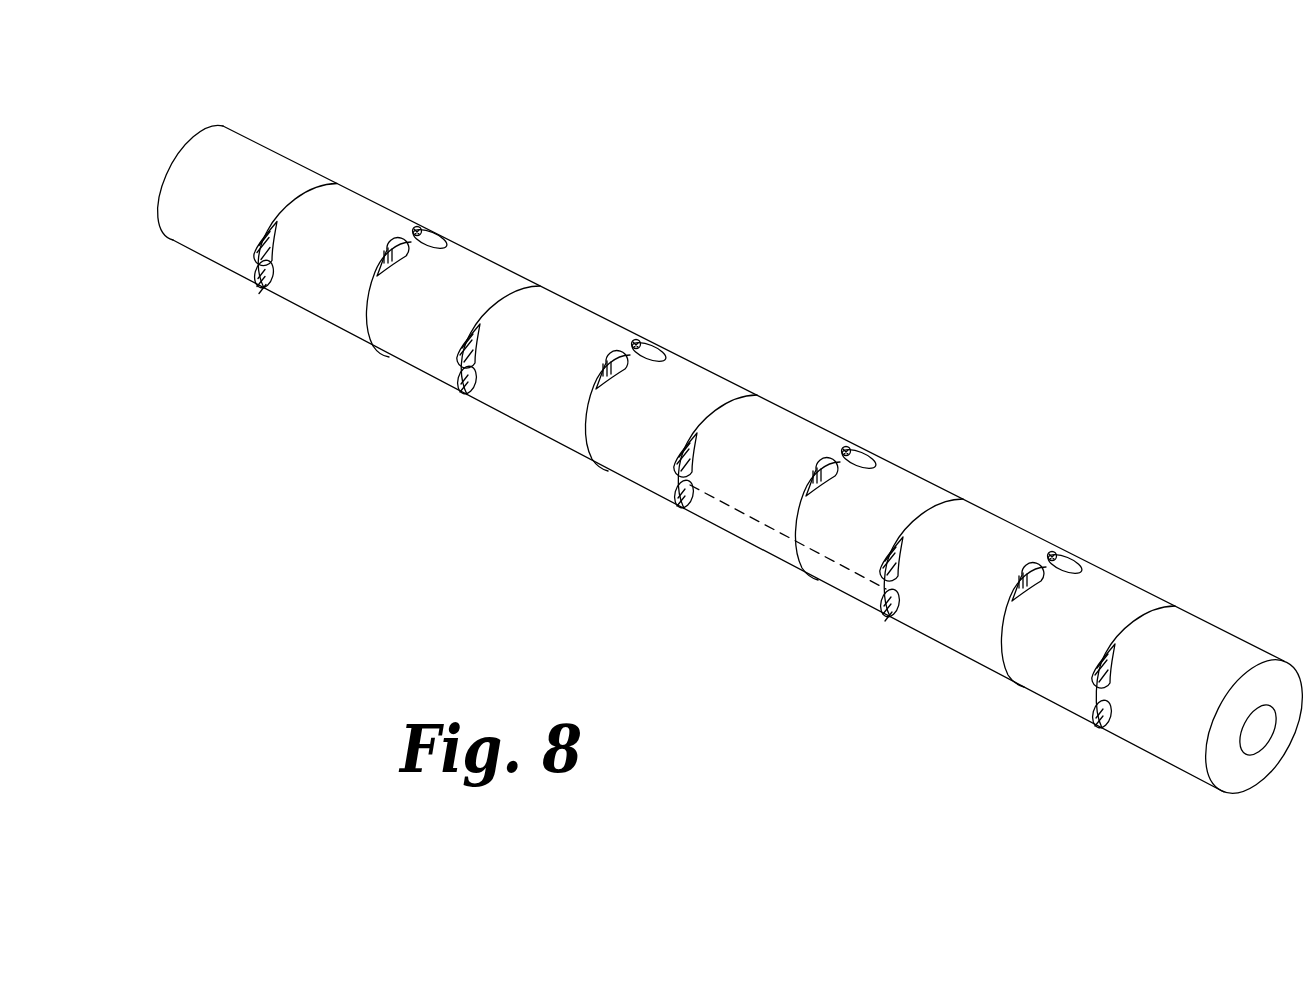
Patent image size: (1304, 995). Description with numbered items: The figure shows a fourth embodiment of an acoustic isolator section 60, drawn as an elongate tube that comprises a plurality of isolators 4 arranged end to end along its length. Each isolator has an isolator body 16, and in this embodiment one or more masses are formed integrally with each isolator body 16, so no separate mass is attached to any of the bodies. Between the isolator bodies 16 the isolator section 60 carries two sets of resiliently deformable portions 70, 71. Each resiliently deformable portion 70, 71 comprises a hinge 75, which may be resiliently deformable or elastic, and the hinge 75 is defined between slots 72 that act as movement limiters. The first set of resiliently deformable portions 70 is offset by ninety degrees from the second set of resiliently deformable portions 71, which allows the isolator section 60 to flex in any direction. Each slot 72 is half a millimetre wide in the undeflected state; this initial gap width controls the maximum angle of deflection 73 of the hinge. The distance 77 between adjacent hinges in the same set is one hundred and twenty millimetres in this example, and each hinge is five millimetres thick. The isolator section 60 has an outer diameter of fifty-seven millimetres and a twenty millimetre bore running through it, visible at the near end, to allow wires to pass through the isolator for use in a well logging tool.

The isolator section 60 is at (146, 126).
The isolator 4 is at (172, 243).
The isolator body 16 is at (203, 219).
The first set of resiliently deformable portions 70 is at (277, 219).
The second set of resiliently deformable portions 71 is at (376, 275).
The slot 72 is at (275, 222).
The maximum angle of deflection 73 is at (1060, 572).
The hinge 75 is at (430, 240).
The distance between adjacent hinges 77 is at (724, 512).